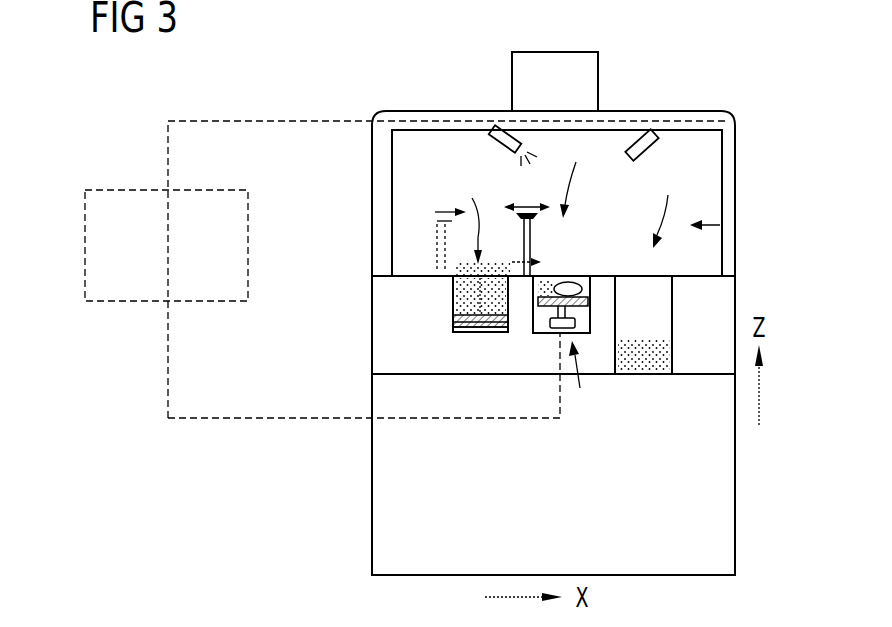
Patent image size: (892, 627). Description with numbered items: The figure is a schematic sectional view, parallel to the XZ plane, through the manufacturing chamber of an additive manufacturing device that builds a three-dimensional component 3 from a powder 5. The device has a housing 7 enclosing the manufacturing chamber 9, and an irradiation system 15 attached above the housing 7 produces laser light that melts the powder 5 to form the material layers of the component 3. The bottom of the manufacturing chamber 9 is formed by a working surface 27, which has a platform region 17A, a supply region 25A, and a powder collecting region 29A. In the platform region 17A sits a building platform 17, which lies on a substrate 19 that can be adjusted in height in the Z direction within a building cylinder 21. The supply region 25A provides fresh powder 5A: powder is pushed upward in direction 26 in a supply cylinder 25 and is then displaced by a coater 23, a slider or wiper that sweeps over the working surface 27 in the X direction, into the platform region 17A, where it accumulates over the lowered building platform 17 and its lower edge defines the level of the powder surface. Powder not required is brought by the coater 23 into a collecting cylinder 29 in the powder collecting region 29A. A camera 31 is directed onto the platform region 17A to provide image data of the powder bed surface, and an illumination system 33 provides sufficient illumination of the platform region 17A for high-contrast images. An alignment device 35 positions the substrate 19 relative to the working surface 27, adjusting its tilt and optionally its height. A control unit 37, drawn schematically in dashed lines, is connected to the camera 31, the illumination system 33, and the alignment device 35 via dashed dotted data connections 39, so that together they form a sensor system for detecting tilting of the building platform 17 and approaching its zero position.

The three-dimensional component 3 is at (576, 282).
The powder 5 is at (592, 265).
The fresh powder 5A is at (453, 292).
The housing 7 is at (735, 166).
The manufacturing chamber 9 is at (735, 228).
The irradiation system 15 is at (590, 75).
The building platform 17 is at (593, 293).
The platform region 17A is at (577, 175).
The substrate 19 is at (593, 306).
The building cylinder 21 is at (585, 382).
The coater 23 is at (432, 255).
The supply cylinder 25 is at (453, 317).
The supply region 25A is at (475, 216).
The direction 26 is at (495, 333).
The working surface 27 is at (410, 272).
The collecting cylinder 29 is at (675, 312).
The powder collecting region 29A is at (668, 205).
The camera 31 is at (664, 140).
The illumination system 33 is at (492, 130).
The alignment device 35 is at (540, 334).
The control unit 37 is at (250, 248).
The data connections 39 is at (263, 121).